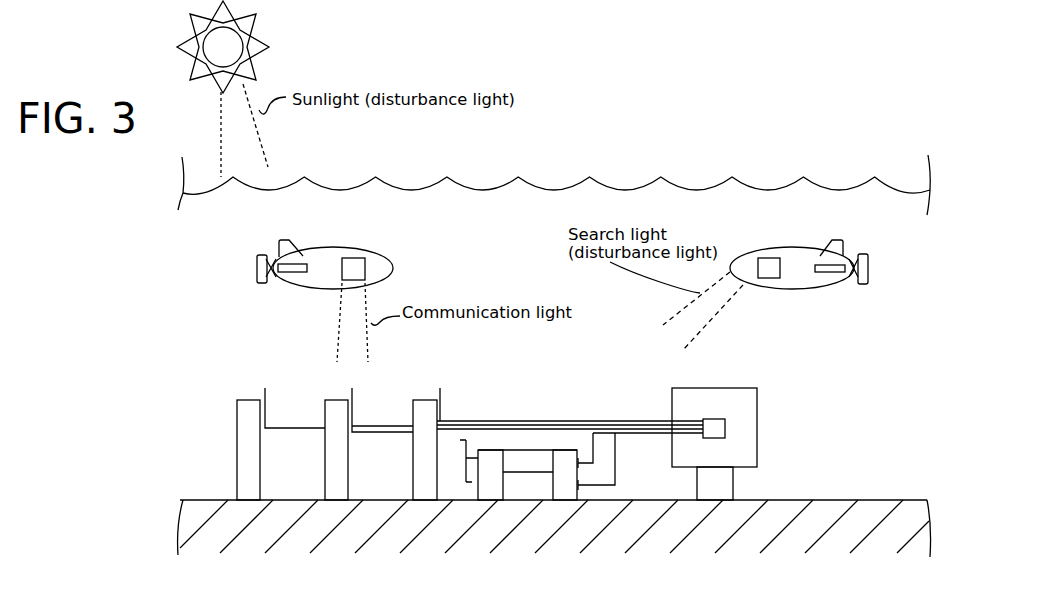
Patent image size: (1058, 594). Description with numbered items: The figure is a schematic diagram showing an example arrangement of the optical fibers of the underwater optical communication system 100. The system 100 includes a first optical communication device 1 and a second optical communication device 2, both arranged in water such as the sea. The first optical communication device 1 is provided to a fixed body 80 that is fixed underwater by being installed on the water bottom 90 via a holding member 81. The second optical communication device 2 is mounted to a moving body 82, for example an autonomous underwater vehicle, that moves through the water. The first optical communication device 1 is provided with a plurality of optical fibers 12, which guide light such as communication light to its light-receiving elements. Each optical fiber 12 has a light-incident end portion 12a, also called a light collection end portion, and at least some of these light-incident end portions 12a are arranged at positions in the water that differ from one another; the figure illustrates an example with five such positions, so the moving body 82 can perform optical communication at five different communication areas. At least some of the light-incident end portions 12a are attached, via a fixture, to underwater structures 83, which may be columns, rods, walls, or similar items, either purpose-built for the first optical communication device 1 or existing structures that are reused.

The first optical communication device 1 is at (726, 425).
The second optical communication device 2 is at (355, 256).
The optical fibers 12 is at (648, 418).
The light-incident end portion 12a is at (268, 390).
The fixed body 80 is at (760, 437).
The holding member 81 is at (696, 478).
The moving body 82 is at (390, 249).
The underwater structure 83 is at (258, 398).
The water bottom 90 is at (824, 499).
The underwater optical communication system 100 is at (362, 168).